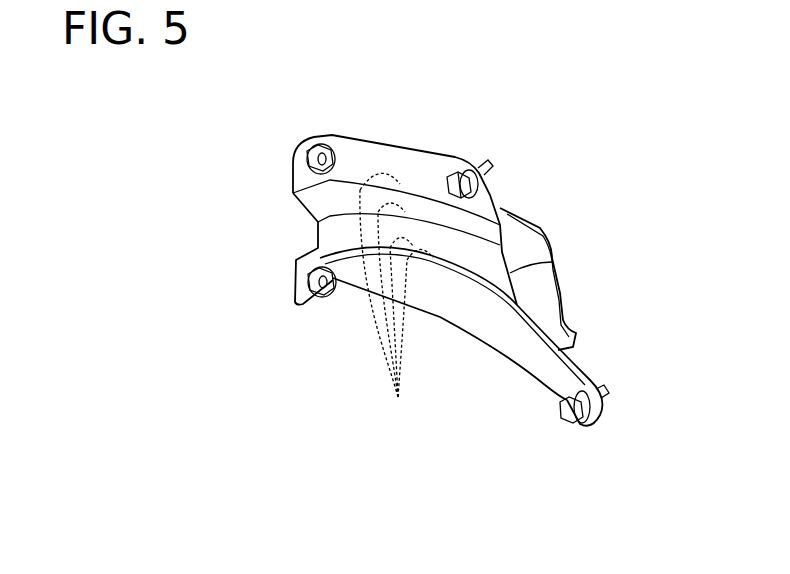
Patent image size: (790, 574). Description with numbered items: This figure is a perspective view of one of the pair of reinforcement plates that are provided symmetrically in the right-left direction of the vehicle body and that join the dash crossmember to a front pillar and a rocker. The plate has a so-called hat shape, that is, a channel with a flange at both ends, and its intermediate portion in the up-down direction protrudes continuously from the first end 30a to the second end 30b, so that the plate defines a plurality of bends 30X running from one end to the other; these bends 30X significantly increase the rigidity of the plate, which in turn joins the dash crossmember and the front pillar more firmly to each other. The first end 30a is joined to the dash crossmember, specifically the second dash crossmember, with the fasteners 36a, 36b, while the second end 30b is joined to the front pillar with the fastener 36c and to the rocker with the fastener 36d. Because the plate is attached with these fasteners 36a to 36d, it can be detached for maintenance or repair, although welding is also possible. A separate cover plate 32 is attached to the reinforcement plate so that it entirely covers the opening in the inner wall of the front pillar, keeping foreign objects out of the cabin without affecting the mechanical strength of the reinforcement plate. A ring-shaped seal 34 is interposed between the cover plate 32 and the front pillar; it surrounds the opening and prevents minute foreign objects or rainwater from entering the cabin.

The first end 30a is at (383, 160).
The second end 30b is at (563, 262).
The bends 30X is at (398, 397).
The cover plate 32 is at (533, 227).
The seal 34 is at (558, 303).
The fastener 36a is at (317, 150).
The fastener 36b is at (323, 303).
The fastener 36c is at (450, 180).
The fastener 36d is at (563, 410).